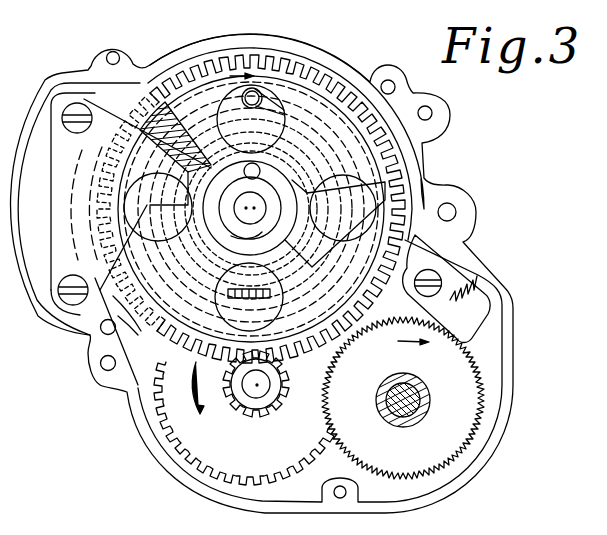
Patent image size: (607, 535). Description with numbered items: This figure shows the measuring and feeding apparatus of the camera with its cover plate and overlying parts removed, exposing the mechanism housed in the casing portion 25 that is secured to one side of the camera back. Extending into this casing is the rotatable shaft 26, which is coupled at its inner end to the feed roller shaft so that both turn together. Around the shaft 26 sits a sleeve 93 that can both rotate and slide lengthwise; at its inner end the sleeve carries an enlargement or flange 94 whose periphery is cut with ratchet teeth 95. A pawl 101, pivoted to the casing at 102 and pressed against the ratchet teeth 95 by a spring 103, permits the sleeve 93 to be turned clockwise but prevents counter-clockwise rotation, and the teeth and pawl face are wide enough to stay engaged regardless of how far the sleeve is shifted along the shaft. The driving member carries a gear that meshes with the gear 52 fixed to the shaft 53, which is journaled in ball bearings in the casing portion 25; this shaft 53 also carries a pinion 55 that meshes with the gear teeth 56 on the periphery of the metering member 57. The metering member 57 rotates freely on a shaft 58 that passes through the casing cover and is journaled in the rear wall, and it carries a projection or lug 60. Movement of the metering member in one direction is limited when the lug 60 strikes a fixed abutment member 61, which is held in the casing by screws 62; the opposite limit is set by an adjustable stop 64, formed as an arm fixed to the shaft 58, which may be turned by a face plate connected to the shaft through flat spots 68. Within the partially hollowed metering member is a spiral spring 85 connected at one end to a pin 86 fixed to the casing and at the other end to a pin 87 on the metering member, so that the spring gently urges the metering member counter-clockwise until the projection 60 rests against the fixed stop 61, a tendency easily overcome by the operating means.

The casing portion 25 is at (433, 504).
The rotatable shaft 26 is at (414, 392).
The gear 52 is at (323, 478).
The shaft 53 is at (258, 390).
The pinion 55 is at (229, 401).
The gear teeth 56 is at (300, 344).
The metering member 57 is at (380, 165).
The shaft 58 is at (248, 223).
The projection or lug 60 is at (174, 112).
The fixed lug or abutment member 61 is at (147, 194).
The screws 62 is at (77, 133).
The adjustable stop or abutment member 64 is at (386, 183).
The flat spots 68 is at (266, 234).
The spiral spring 85 is at (340, 74).
The pin 86 is at (257, 94).
The pin 87 is at (253, 208).
The sleeve 93 is at (432, 410).
The enlargement or flange 94 is at (455, 432).
The ratchet teeth 95 is at (485, 403).
The pawl 101 is at (485, 307).
The pivot 102 is at (433, 278).
The spring 103 is at (472, 280).